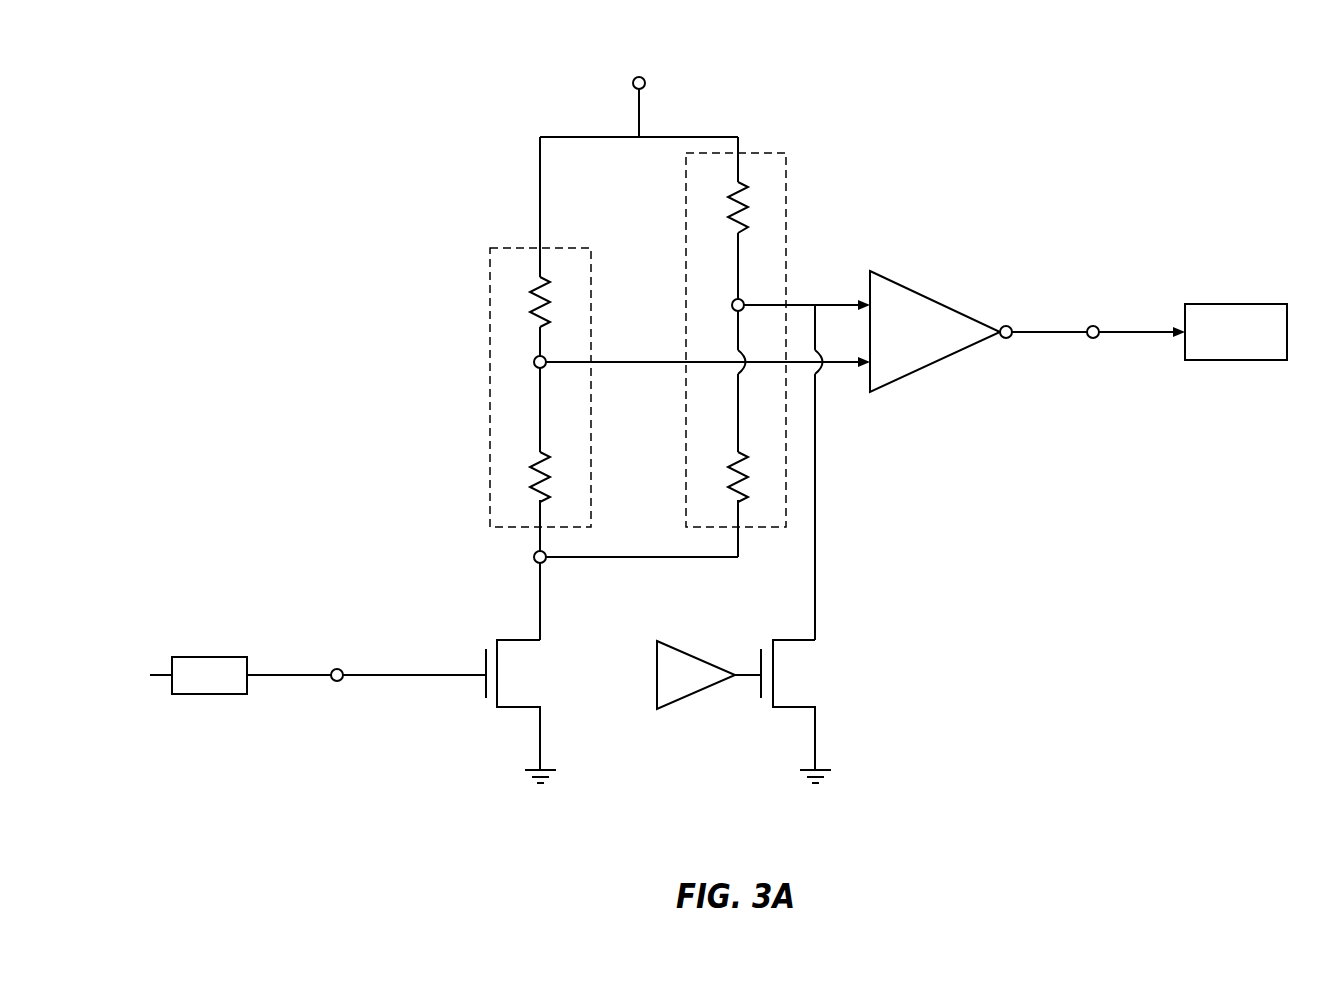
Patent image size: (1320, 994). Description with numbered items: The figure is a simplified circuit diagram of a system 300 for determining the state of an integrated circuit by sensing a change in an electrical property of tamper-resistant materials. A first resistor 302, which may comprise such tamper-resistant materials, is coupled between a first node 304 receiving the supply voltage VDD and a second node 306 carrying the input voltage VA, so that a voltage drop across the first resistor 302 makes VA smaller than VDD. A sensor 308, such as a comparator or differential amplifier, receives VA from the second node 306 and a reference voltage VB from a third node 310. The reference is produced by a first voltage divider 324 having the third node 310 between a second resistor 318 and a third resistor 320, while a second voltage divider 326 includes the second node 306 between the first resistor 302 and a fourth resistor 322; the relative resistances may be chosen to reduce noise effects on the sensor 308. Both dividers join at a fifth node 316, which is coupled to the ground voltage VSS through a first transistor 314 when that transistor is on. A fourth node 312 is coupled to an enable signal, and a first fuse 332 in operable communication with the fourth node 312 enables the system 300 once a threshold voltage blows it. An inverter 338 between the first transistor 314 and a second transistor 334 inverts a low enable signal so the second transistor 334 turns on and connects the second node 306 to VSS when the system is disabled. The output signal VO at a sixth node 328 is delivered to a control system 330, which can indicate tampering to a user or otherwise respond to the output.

The system 300 is at (366, 116).
The first resistor 302 is at (746, 206).
The first node 304 is at (646, 85).
The second node 306 is at (746, 301).
The sensor 308 is at (933, 297).
The third node 310 is at (534, 362).
The fourth node 312 is at (339, 668).
The first transistor 314 is at (517, 638).
The fifth node 316 is at (534, 557).
The second resistor 318 is at (535, 460).
The third resistor 320 is at (535, 308).
The fourth resistor 322 is at (735, 462).
The first voltage divider 324 is at (496, 248).
The second voltage divider 326 is at (777, 153).
The sixth node 328 is at (1093, 326).
The control system 330 is at (1236, 332).
The first fuse 332 is at (205, 657).
The second transistor 334 is at (795, 638).
The inverter 338 is at (678, 700).